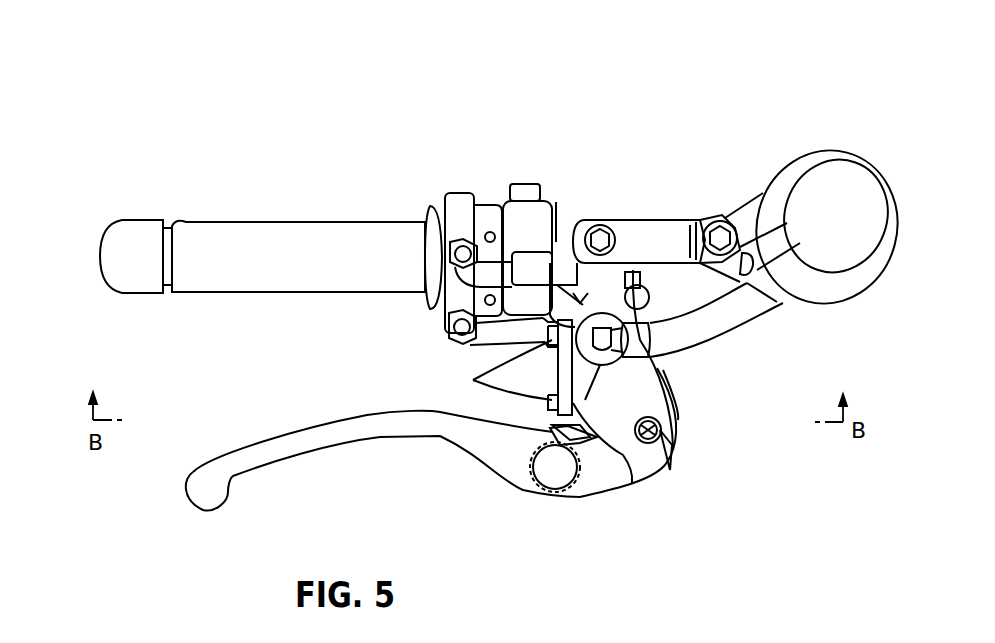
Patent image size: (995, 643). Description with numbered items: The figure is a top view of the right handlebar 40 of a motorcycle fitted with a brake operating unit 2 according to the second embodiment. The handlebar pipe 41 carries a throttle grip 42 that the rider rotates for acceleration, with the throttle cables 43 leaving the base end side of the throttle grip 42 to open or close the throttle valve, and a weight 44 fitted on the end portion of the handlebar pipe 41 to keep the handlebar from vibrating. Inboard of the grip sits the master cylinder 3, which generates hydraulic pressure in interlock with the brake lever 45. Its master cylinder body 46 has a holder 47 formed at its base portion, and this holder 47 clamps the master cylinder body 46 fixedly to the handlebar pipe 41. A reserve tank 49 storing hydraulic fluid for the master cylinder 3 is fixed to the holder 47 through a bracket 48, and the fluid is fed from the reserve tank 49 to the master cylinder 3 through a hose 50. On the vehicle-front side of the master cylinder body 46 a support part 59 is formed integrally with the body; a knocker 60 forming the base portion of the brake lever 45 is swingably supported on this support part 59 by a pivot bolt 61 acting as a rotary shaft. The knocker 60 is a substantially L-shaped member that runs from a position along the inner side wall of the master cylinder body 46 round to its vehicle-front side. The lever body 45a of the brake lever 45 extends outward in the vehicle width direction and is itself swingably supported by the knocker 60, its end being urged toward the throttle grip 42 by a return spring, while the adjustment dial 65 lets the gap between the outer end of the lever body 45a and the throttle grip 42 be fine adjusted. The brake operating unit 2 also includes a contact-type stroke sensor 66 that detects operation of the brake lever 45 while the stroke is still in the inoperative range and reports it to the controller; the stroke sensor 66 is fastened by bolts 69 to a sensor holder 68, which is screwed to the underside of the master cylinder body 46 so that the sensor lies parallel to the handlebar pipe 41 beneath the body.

The right handlebar 40 is at (412, 90).
The weight 44 is at (144, 232).
The throttle grip 42 is at (264, 228).
The handlebar pipe 41 is at (563, 238).
The throttle cables 43 is at (452, 268).
The holder 47 is at (600, 222).
The bracket 48 is at (645, 238).
The reserve tank 49 is at (826, 168).
The hose 50 is at (712, 335).
The master cylinder body 46 is at (627, 374).
The support part 59 is at (652, 398).
The knocker 60 is at (680, 440).
The pivot bolt 61 is at (662, 430).
The stroke sensor 66 is at (552, 378).
The bolts 69 is at (498, 370).
The sensor holder 68 is at (573, 412).
The brake lever 45 is at (372, 437).
The lever body 45a is at (440, 440).
The adjustment dial 65 is at (552, 485).
The brake operating unit 2 is at (613, 496).
The master cylinder 3 is at (620, 413).